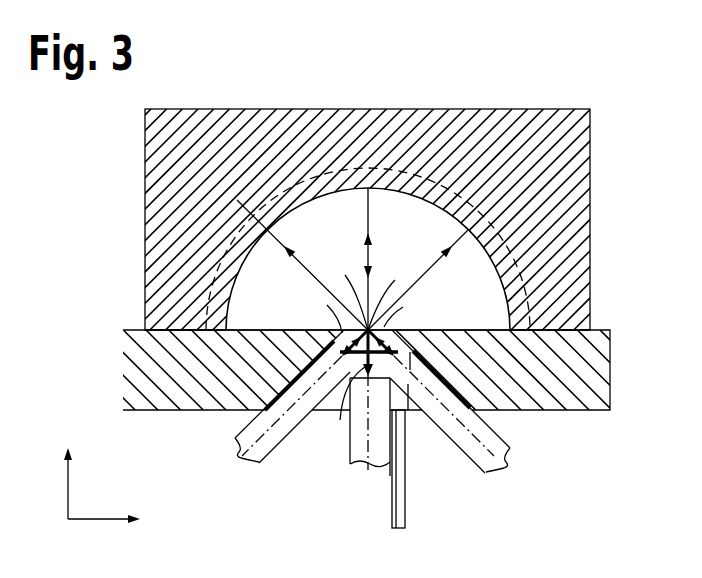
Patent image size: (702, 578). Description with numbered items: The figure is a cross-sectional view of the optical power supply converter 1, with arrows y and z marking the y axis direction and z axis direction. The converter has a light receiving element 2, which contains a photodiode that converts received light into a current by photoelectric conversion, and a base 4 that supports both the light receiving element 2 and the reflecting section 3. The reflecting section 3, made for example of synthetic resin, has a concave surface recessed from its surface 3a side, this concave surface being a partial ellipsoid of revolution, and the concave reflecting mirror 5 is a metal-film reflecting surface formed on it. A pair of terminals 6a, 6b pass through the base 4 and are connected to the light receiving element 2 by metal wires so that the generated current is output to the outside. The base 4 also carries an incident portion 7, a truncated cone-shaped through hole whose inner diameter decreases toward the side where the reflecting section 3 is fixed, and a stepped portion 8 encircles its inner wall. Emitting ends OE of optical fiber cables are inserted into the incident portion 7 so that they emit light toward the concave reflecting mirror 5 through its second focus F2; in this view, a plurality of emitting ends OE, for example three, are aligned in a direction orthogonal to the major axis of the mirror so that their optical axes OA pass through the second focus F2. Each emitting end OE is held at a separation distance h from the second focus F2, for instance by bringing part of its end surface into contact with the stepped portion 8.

The optical power supply converter 1 is at (104, 147).
The light receiving element 2 is at (338, 340).
The reflecting section 3 is at (590, 143).
The surface 3a is at (582, 346).
The base 4 is at (123, 380).
The concave reflecting mirror 5 is at (478, 262).
The incident portion 7 is at (404, 345).
The stepped portion 8 is at (409, 412).
The terminal 6a is at (405, 517).
The terminal 6b is at (392, 516).
The optical axis OA is at (246, 425).
The emitting end OE is at (437, 358).
The second focus F2 is at (366, 268).
The separation distance h is at (363, 358).
The z axis direction z is at (67, 481).
The y axis direction y is at (103, 518).